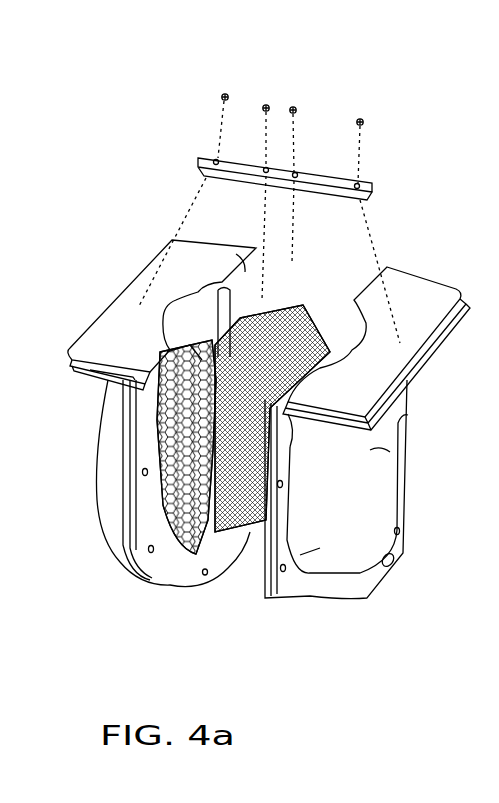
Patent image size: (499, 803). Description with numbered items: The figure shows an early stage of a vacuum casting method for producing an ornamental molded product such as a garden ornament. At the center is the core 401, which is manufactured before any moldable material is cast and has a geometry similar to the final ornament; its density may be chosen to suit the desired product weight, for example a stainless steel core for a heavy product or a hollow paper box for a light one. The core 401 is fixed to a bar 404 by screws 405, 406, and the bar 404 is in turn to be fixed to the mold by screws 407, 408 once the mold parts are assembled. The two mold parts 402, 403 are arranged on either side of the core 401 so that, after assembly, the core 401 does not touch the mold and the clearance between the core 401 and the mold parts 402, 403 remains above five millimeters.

The core 401 is at (272, 306).
The mold part 402 is at (250, 583).
The mold part 403 is at (120, 547).
The bar 404 is at (375, 184).
The screw 405 is at (268, 95).
The screw 406 is at (297, 106).
The screw 407 is at (226, 92).
The screw 408 is at (366, 118).